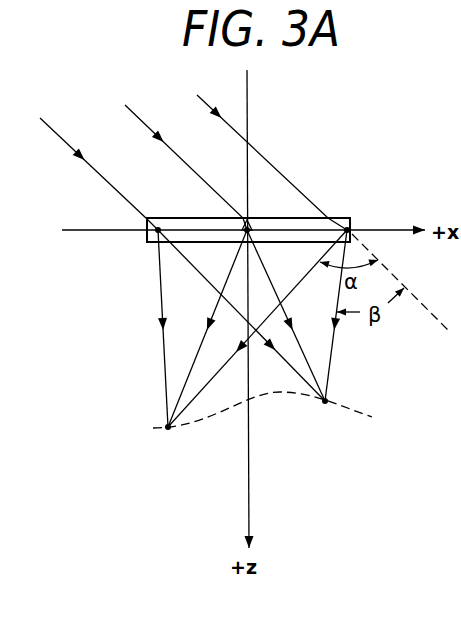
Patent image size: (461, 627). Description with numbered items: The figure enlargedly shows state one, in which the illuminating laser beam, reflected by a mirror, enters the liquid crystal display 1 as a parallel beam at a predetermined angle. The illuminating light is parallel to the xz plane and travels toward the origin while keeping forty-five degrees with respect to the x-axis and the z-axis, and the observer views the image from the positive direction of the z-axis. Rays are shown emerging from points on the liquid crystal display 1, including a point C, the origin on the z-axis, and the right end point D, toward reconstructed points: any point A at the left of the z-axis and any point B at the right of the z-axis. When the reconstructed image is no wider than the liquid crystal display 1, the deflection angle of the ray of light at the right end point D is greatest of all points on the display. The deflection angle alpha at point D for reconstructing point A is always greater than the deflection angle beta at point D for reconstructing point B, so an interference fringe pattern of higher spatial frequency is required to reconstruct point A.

The liquid crystal display 1 is at (346, 218).
The point A is at (168, 442).
The point B is at (325, 417).
The incidence point C is at (157, 232).
The right end point D is at (352, 230).